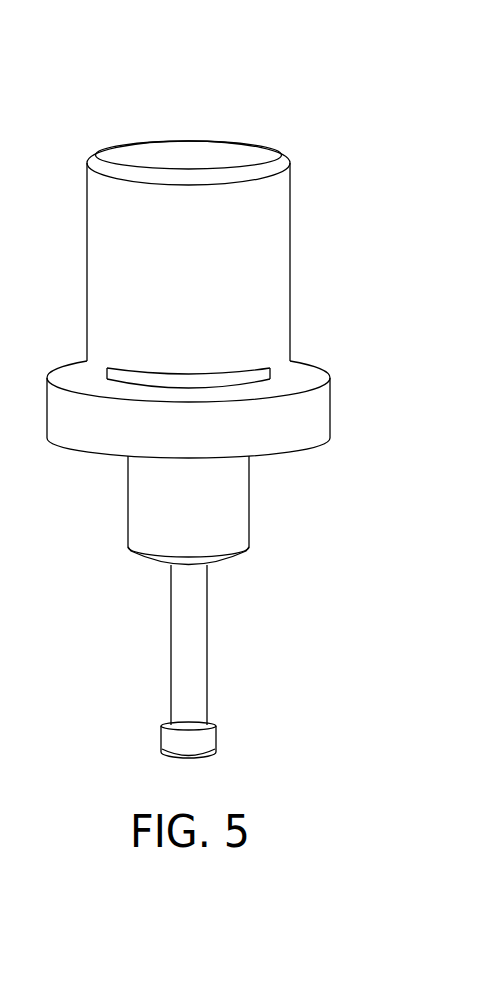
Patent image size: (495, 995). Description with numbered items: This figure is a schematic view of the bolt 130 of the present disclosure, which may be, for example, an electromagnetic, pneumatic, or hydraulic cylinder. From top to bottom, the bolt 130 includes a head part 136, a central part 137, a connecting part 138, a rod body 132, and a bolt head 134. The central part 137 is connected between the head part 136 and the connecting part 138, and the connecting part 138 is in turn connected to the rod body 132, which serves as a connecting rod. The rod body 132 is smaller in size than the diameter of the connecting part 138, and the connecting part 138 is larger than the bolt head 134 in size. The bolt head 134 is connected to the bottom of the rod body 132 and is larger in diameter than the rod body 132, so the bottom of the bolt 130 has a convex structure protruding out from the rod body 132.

The bolt 130 is at (82, 118).
The rod body 132 is at (198, 642).
The bolt head 134 is at (208, 740).
The head part 136 is at (278, 257).
The central part 137 is at (318, 412).
The connecting part 138 is at (140, 508).